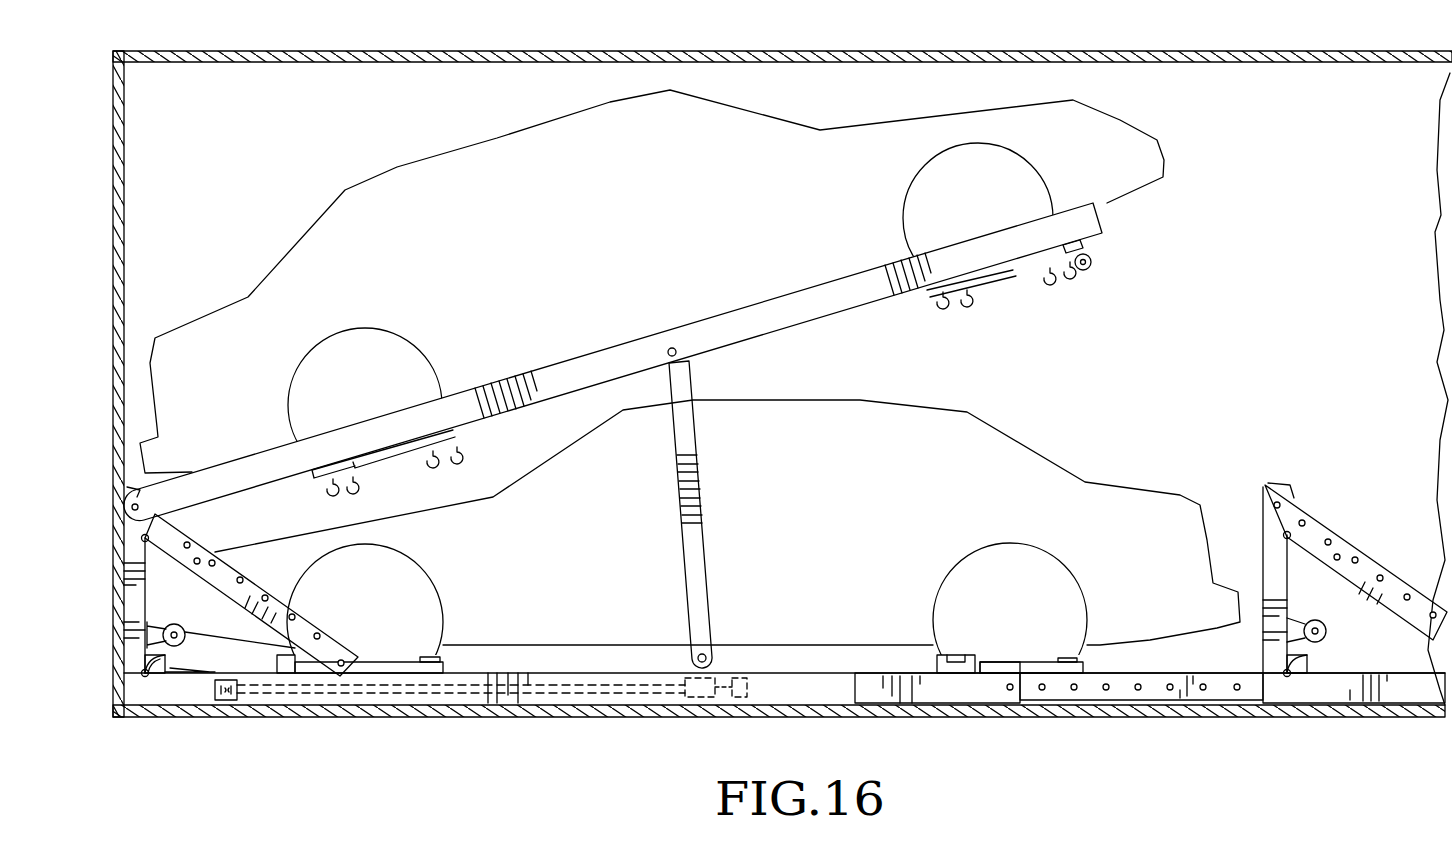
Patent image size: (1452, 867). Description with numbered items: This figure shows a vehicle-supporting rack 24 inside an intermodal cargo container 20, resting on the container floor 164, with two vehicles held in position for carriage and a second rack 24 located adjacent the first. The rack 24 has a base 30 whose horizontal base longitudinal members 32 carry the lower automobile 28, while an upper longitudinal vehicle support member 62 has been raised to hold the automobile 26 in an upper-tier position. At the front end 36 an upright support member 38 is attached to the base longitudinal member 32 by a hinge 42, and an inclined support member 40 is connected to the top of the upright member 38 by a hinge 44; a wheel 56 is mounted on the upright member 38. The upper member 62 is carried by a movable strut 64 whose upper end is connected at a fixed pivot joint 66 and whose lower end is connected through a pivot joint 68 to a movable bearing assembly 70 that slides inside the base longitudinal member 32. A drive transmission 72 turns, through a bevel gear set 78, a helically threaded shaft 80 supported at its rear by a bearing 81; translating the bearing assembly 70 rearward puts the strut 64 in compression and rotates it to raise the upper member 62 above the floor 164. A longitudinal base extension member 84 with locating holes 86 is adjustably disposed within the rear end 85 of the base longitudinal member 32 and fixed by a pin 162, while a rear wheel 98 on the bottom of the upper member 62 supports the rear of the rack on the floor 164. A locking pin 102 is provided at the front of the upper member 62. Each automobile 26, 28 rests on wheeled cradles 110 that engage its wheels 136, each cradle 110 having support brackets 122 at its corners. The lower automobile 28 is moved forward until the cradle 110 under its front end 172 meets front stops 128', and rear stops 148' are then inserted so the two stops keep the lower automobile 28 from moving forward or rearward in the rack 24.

The intermodal cargo container 20 is at (1035, 50).
The vehicle-supporting rack 24 is at (1112, 219).
The automobile 26 is at (1118, 117).
The automobile 28 is at (1035, 450).
The base 30 is at (495, 672).
The base longitudinal member 32 is at (832, 708).
The front end 36 is at (138, 678).
The upright support member 38 is at (148, 605).
The inclined support member 40 is at (250, 596).
The hinge 42 is at (148, 678).
The hinge 44 is at (168, 537).
The wheel 56 is at (186, 633).
The upper longitudinal vehicle support member 62 is at (838, 310).
The movable strut 64 is at (690, 380).
The pivot joint 66 is at (672, 347).
The pivot joint 68 is at (712, 658).
The movable bearing assembly 70 is at (690, 680).
The drive transmission 72 is at (168, 676).
The bevel gear set 78 is at (242, 703).
The helically threaded shaft 80 is at (575, 697).
The bearing 81 is at (748, 692).
The longitudinal base extension member 84 is at (1162, 690).
The rear end 85 is at (1000, 672).
The locating hole 86 is at (1108, 690).
The rear wheel 98 is at (1100, 262).
The locking pin 102 is at (150, 505).
The wheeled cradle 110 is at (1003, 280).
The support bracket 122 is at (290, 660).
The front stop 128' is at (274, 717).
The wheel 136 is at (395, 470).
The rear stop 148' is at (994, 613).
The pin 162 is at (1008, 692).
The floor 164 is at (855, 690).
The front end 172 is at (255, 540).